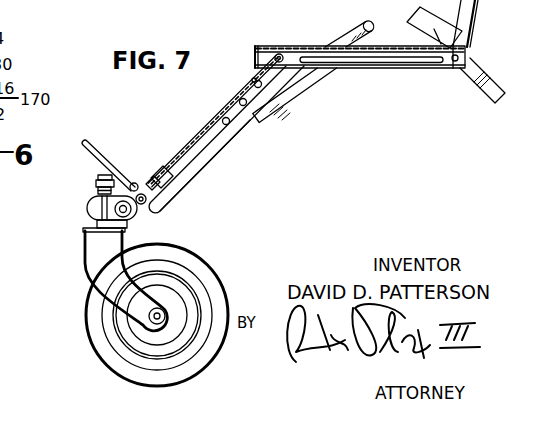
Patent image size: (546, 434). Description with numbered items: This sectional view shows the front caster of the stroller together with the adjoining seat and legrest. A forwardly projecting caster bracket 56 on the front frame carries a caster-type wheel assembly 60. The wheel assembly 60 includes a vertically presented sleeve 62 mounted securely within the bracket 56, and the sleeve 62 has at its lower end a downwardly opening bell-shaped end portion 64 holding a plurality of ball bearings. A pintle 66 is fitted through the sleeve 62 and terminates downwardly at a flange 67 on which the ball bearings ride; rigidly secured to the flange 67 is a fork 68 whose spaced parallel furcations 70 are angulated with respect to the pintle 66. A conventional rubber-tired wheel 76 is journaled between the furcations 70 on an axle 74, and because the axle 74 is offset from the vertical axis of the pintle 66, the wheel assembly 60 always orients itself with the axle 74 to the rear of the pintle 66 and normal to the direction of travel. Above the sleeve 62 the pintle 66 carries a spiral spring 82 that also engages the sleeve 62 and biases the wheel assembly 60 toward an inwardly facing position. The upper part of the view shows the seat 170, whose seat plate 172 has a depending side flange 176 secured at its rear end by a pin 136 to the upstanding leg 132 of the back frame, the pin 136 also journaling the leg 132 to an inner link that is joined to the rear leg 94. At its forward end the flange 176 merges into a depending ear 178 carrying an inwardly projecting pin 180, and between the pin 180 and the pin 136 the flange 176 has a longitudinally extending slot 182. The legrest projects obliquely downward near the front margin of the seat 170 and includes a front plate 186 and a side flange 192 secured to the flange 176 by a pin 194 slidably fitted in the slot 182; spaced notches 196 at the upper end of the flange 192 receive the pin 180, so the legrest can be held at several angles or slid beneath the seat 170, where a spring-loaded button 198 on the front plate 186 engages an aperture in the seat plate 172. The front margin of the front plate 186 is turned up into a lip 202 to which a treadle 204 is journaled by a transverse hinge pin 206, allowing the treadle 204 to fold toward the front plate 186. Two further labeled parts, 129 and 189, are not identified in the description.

The caster bracket 56 is at (90, 215).
The wheel assembly 60 is at (85, 268).
The sleeve 62 is at (88, 203).
The bell-shaped end portion 64 is at (126, 229).
The pintle 66 is at (99, 181).
The flange 67 is at (86, 228).
The fork 68 is at (128, 239).
The furcations 70 is at (98, 295).
The axle 74 is at (150, 320).
The rubber-tired wheel 76 is at (87, 327).
The spiral spring 82 is at (96, 183).
The leg 94 is at (268, 118).
The tubular member 129 is at (488, 104).
The leg 132 is at (478, 24).
The pin 136 is at (467, 53).
The seat 170 is at (366, 69).
The seat plate 172 is at (297, 45).
The side flange 176 is at (396, 69).
The ear 178 is at (254, 62).
The pin 180 is at (285, 96).
The slot 182 is at (425, 63).
The front plate 186 is at (230, 102).
The strut bolt 189 is at (211, 121).
The side flange 192 is at (209, 160).
The pin 194 is at (272, 46).
The notches 196 is at (236, 98).
The spring-loaded button 198 is at (153, 178).
The lip 202 is at (147, 202).
The treadle 204 is at (97, 129).
The hinge pin 206 is at (132, 184).